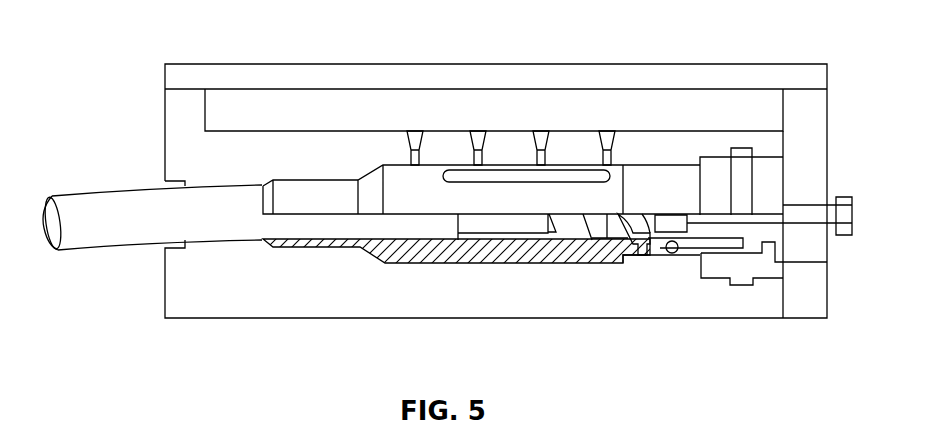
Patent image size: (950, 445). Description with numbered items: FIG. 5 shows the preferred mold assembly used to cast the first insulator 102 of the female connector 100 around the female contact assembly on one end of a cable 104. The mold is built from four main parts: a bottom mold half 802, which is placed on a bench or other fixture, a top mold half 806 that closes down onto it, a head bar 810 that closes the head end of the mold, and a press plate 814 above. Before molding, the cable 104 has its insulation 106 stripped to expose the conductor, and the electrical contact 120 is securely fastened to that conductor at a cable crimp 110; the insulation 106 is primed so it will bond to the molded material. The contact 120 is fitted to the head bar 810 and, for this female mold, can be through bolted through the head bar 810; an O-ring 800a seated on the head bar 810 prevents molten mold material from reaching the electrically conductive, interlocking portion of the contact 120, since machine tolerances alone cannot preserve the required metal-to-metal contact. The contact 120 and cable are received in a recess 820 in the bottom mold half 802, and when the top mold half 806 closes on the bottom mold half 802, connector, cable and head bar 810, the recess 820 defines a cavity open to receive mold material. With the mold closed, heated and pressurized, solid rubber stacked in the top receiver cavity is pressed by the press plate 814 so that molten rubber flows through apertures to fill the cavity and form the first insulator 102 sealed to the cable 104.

The bottom mold half 802 is at (219, 305).
The top mold half 806 is at (196, 148).
The press plate 814 is at (373, 107).
The head bar 810 is at (766, 182).
The cable 104 is at (114, 187).
The insulation 106 is at (103, 225).
The cable crimp 110 is at (483, 223).
The recess 820 is at (362, 258).
The electrical contact 120 is at (618, 237).
The first insulator 102 is at (597, 262).
The female connector 100 is at (642, 252).
The fixture 800a is at (668, 253).